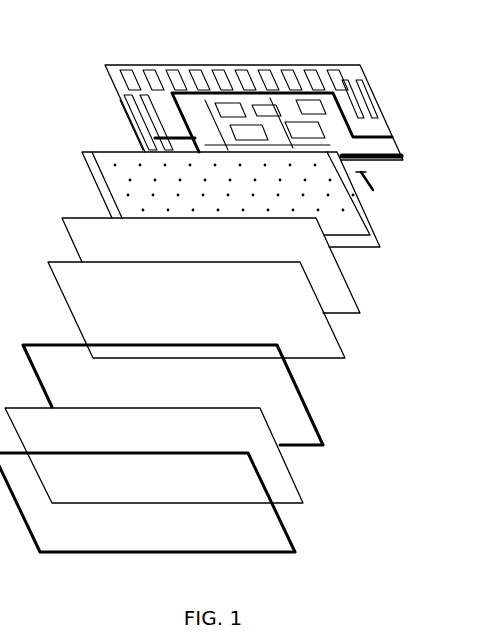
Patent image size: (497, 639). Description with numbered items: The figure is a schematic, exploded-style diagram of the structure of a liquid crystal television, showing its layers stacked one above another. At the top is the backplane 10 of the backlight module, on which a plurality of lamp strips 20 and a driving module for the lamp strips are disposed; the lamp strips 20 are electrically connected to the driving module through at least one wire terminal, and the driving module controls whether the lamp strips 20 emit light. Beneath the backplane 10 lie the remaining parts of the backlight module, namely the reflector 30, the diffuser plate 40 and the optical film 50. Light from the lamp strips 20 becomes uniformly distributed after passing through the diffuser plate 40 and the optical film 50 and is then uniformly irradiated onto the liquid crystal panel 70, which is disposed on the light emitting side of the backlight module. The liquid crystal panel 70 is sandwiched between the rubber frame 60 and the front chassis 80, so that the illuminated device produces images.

The backplane 10 is at (365, 78).
The lamp strips 20 is at (402, 157).
The reflector 30 is at (368, 217).
The diffuser plate 40 is at (350, 285).
The optical film 50 is at (345, 348).
The rubber frame 60 is at (312, 418).
The liquid crystal panel 70 is at (298, 487).
The front chassis 80 is at (288, 535).